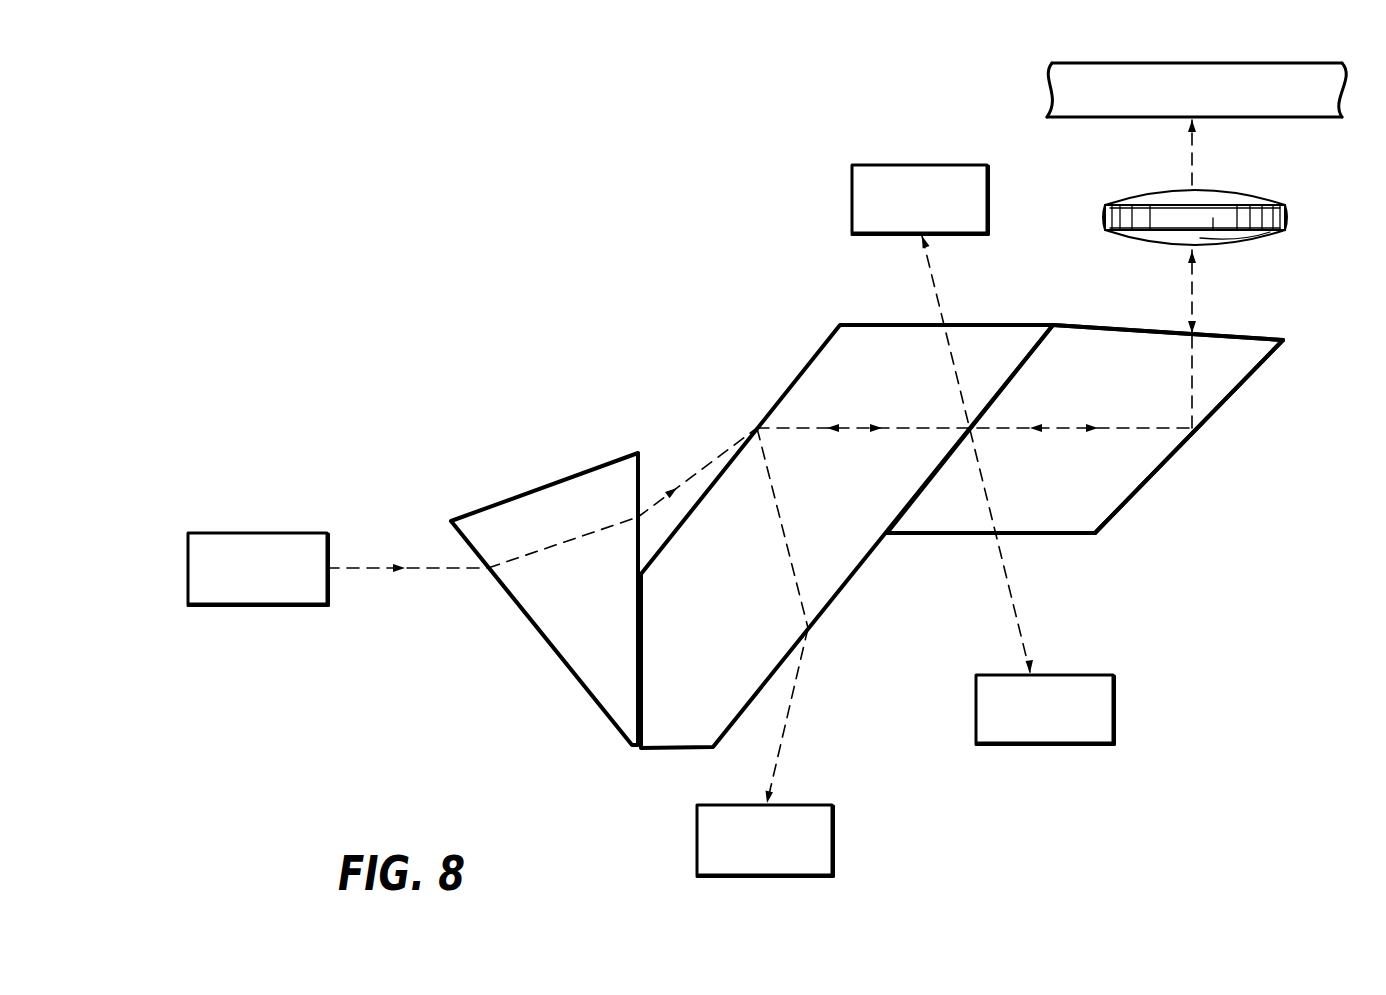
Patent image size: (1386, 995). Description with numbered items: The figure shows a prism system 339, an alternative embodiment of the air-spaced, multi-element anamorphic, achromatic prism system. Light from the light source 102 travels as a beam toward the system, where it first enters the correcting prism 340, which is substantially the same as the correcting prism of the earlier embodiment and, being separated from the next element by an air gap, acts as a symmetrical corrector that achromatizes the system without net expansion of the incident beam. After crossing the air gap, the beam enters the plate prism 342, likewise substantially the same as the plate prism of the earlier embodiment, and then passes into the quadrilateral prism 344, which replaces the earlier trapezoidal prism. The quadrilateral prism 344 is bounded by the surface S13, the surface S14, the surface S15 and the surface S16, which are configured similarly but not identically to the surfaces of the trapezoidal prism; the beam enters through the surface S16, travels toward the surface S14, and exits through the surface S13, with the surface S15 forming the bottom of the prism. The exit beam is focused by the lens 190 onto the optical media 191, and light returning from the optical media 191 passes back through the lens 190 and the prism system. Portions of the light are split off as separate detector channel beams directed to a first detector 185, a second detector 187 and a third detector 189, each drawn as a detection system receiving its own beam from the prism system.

The prism system 339 is at (500, 147).
The light source 102 is at (278, 533).
The correcting prism 340 is at (582, 490).
The plate prism 342 is at (838, 355).
The quadrilateral prism 344 is at (1077, 345).
The first detector 185 is at (1085, 675).
The second detector 187 is at (805, 804).
The third detector 189 is at (947, 164).
The lens 190 is at (1265, 208).
The optical media 191 is at (1308, 72).
The surface S13 is at (1168, 344).
The surface S14 is at (1189, 436).
The surface S15 is at (991, 518).
The surface S16 is at (970, 429).